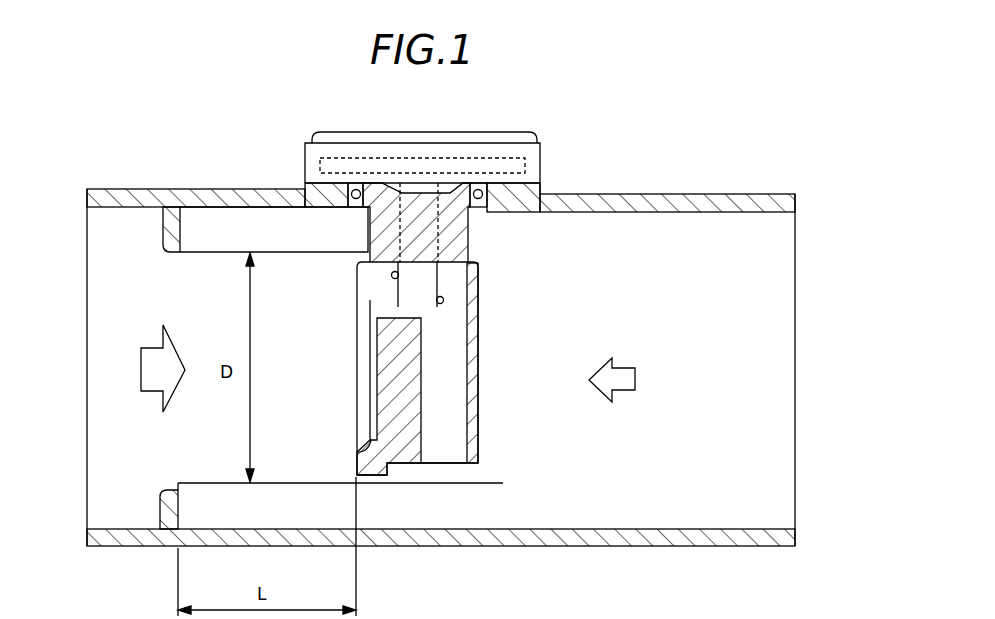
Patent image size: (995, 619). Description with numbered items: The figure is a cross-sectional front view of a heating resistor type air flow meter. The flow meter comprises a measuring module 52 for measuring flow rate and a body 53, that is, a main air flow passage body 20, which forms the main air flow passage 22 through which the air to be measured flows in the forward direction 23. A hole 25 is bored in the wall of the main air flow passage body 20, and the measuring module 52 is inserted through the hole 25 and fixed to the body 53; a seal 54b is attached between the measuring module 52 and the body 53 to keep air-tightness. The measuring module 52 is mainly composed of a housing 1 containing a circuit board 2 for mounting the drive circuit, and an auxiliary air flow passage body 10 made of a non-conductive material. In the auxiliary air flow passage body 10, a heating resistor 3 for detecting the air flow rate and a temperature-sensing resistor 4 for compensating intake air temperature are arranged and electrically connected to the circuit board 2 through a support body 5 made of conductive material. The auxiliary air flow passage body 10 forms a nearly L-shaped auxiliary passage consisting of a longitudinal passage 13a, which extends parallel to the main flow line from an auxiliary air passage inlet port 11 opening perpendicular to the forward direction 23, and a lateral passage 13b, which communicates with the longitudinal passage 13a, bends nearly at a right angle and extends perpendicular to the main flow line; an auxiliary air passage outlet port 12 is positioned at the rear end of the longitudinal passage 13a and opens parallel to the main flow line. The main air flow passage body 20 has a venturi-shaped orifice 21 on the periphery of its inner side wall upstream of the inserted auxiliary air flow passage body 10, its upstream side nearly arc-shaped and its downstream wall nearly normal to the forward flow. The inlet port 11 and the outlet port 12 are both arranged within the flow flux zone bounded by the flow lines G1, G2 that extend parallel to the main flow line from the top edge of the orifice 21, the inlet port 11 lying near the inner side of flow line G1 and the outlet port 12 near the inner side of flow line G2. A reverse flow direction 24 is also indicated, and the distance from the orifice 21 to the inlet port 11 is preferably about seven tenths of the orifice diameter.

The housing 1 is at (480, 136).
The circuit board 2 is at (397, 158).
The heating resistor 3 is at (360, 262).
The temperature-sensing resistor 4 is at (416, 430).
The support body 5 is at (397, 293).
The auxiliary air flow passage body 10 is at (403, 460).
The auxiliary air passage inlet port 11 is at (357, 322).
The auxiliary air passage outlet port 12 is at (442, 450).
The longitudinal passage 13a is at (415, 307).
The lateral passage 13b is at (468, 447).
The main air flow passage body 20 is at (441, 386).
The orifice 21 is at (164, 490).
The main air flow passage 22 is at (583, 483).
The forward direction of air flow 23 is at (143, 391).
The reverse flow direction 24 is at (635, 370).
The hole 25 is at (490, 215).
The measuring module 52 is at (422, 134).
The body 53 is at (642, 195).
The seal 54b is at (487, 185).
The flow line G1 is at (267, 252).
The flow line G2 is at (497, 487).